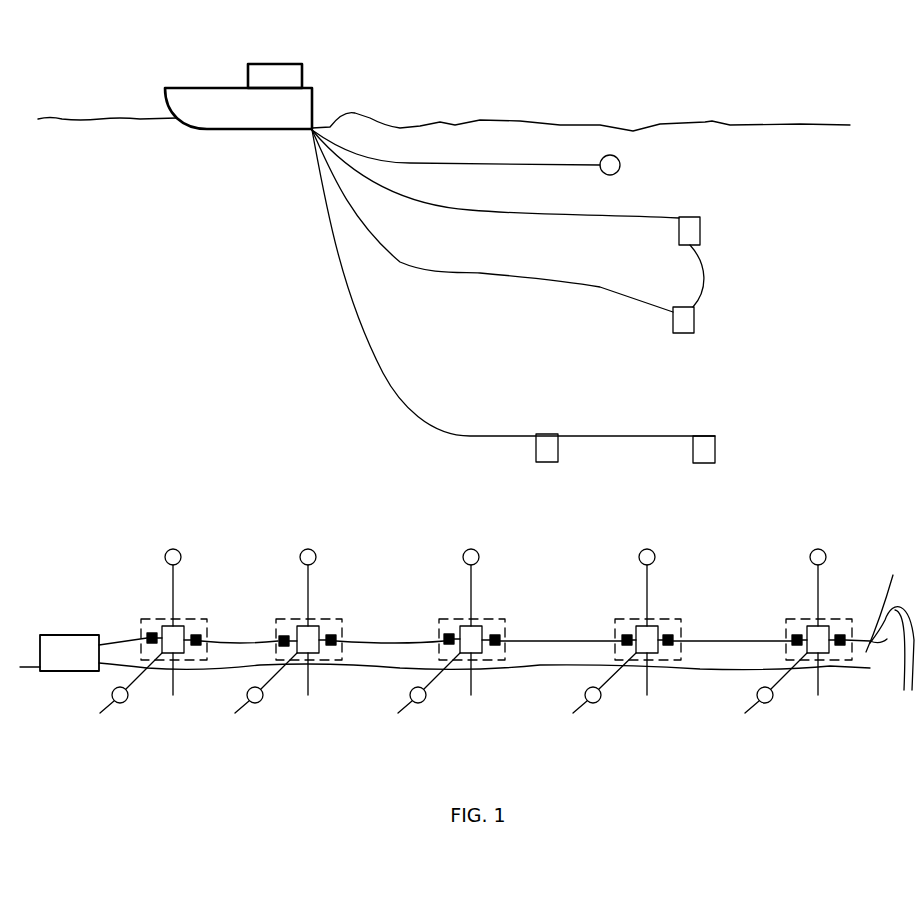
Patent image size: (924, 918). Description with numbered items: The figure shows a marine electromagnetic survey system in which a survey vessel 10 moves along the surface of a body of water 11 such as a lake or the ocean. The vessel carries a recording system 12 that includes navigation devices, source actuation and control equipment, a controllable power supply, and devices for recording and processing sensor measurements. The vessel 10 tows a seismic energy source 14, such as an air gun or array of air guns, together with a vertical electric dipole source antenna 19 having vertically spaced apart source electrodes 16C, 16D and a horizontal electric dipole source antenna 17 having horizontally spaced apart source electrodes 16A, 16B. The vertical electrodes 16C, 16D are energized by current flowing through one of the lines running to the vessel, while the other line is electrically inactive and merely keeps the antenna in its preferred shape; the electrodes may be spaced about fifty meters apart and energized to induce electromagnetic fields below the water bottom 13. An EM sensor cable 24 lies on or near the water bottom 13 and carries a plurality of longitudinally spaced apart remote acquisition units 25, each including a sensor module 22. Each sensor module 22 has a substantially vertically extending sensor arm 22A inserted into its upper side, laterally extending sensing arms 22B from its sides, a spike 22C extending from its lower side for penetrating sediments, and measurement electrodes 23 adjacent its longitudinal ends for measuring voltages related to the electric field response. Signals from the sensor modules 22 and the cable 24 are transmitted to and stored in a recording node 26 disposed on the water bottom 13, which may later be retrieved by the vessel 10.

The survey vessel 10 is at (200, 97).
The body of water 11 is at (540, 123).
The recording system 12 is at (282, 70).
The water bottom 13 is at (33, 668).
The seismic energy source 14 is at (620, 165).
The source electrode 16A is at (545, 434).
The source electrode 16B is at (703, 436).
The source electrode 16C is at (700, 230).
The source electrode 16D is at (694, 322).
The horizontal electric dipole source antenna 17 is at (357, 335).
The vertical electric dipole source antenna 19 is at (520, 286).
The sensor module 22 is at (175, 633).
The vertically extending sensor arm 22A is at (179, 552).
The laterally extending sensing arm 22B is at (440, 697).
The spike 22C is at (175, 667).
The measurement electrode 23 is at (150, 630).
The EM sensor cable 24 is at (400, 642).
The remote acquisition unit 25 is at (163, 620).
The recording node 26 is at (55, 633).